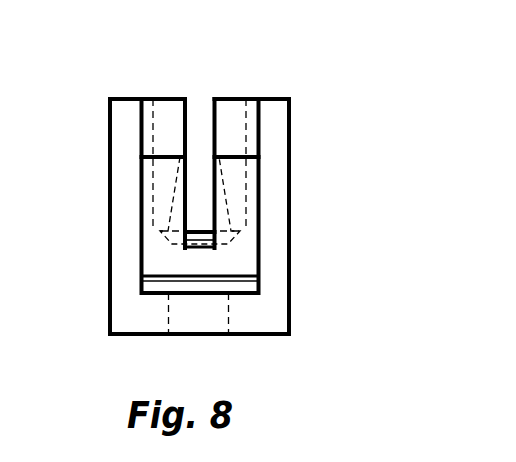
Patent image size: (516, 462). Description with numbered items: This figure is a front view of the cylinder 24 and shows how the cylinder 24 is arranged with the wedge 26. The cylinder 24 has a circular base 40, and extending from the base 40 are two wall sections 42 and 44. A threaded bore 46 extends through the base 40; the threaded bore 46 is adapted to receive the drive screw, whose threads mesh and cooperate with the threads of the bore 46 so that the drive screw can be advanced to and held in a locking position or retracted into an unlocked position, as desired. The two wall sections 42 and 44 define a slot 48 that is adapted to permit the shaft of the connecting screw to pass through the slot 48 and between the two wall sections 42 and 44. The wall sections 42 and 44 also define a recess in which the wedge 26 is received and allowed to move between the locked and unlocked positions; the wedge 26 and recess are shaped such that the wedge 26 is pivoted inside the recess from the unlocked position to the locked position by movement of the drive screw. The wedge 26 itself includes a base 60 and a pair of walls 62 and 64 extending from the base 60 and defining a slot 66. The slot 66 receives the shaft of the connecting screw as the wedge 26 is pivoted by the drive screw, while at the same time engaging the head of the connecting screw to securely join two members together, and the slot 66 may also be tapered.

The cylinder 24 is at (313, 143).
The wedge 26 is at (237, 245).
The circular base 40 is at (110, 305).
The wall section 42 is at (272, 262).
The wall section 44 is at (109, 156).
The threaded bore 46 is at (198, 305).
The slot 48 is at (198, 113).
The base 60 is at (228, 262).
The wall 62 is at (240, 187).
The wall 64 is at (168, 172).
The slot 66 is at (208, 198).